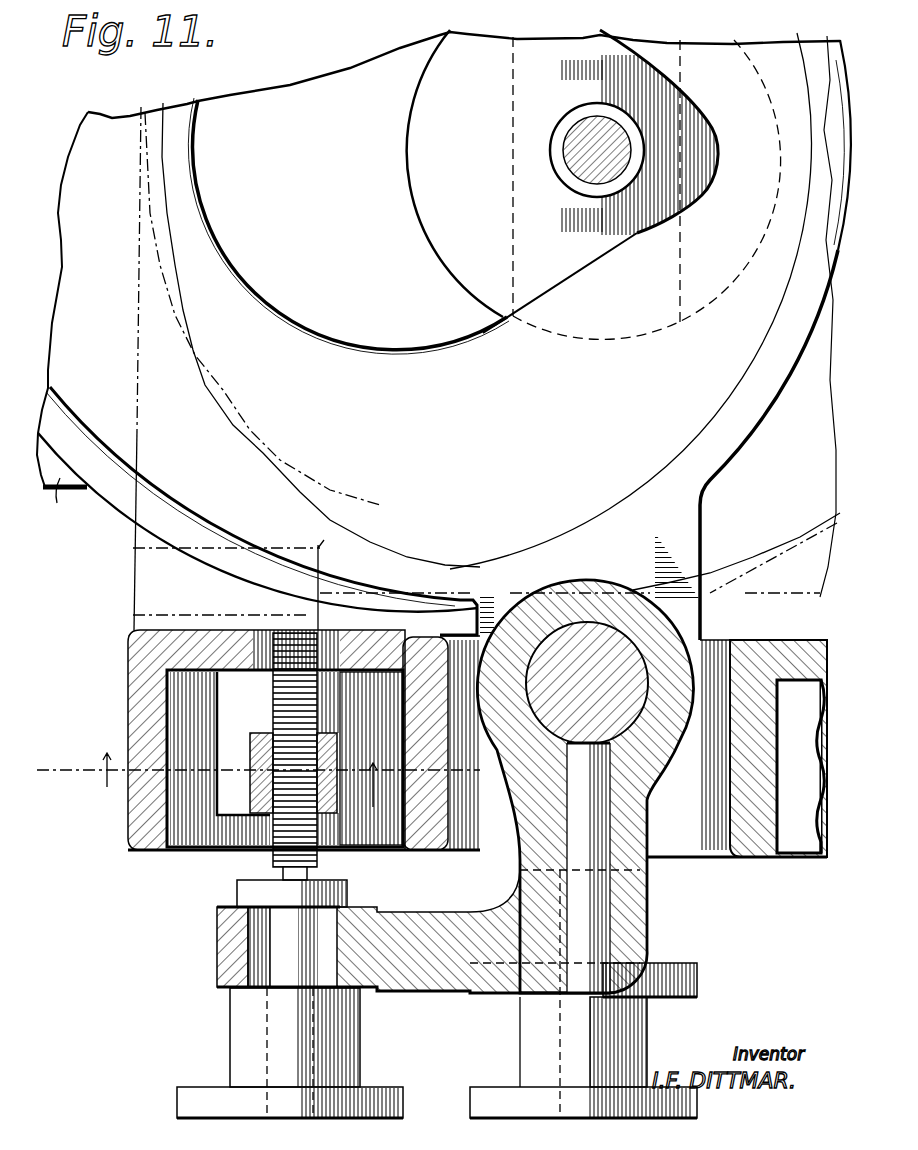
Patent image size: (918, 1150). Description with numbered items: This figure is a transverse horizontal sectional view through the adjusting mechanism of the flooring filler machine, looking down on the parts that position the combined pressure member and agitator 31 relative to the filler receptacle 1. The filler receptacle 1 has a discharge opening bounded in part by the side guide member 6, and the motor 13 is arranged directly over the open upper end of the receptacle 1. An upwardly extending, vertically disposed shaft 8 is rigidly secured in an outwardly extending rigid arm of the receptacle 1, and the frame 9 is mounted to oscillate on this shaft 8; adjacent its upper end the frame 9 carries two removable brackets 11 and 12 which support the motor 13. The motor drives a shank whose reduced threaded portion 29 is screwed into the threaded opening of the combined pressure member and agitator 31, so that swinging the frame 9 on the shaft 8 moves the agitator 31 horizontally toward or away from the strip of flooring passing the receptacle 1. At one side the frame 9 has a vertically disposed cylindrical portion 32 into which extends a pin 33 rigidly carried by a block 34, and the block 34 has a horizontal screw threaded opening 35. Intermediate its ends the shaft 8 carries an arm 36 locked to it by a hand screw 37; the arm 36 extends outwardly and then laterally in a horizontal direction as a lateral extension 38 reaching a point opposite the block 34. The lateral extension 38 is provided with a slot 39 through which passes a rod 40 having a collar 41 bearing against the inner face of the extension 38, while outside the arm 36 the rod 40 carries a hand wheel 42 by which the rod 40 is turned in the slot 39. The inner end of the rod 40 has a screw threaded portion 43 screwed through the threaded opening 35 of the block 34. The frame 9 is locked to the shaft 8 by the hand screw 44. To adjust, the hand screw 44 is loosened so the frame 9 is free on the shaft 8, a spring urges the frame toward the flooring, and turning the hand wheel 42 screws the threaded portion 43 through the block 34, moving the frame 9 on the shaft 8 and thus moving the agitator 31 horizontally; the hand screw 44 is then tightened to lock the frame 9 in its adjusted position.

The filler receptacle 1 is at (133, 507).
The side guide member 6 is at (64, 507).
The shaft 8 is at (620, 660).
The frame 9 is at (760, 820).
The bracket 11 is at (160, 595).
The bracket 12 is at (262, 780).
The motor 13 is at (803, 537).
The reduced threaded portion 29 is at (597, 150).
The combined pressure member and agitator 31 is at (573, 137).
The cylindrical portion 32 is at (371, 758).
The pin 33 is at (140, 817).
The block 34 is at (263, 733).
The screw threaded opening 35 is at (320, 750).
The arm 36 is at (627, 890).
The hand screw 37 is at (627, 1023).
The laterally turned end 38 is at (443, 907).
The slot 39 is at (263, 957).
The rod 40 is at (283, 930).
The collar 41 is at (248, 893).
The hand wheel 42 is at (253, 1037).
The screw threaded portion 43 is at (312, 860).
The hand screw 44 is at (727, 947).